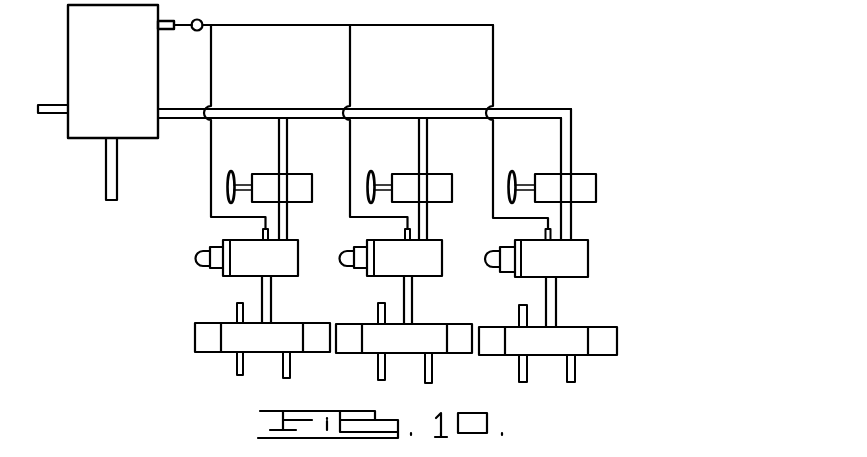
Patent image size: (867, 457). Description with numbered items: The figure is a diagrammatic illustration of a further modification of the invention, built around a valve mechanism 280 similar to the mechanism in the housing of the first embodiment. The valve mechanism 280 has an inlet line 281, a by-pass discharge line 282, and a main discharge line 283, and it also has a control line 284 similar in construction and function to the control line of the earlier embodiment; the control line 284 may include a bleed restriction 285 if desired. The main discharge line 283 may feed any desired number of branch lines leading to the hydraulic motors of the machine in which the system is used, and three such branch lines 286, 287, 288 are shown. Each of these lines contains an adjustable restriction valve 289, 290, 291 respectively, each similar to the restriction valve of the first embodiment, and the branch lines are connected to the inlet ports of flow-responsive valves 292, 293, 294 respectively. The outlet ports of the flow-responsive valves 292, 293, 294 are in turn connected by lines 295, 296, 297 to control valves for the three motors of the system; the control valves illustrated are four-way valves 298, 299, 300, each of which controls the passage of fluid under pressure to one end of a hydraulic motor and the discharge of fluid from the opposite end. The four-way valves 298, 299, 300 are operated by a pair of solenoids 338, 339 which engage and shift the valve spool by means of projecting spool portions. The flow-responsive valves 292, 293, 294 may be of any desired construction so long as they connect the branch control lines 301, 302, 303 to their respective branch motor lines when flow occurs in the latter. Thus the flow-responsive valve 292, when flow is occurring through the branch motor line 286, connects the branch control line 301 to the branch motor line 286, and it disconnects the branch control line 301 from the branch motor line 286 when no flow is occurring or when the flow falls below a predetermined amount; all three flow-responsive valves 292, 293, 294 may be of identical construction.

The valve mechanism 280 is at (80, 49).
The inlet line 281 is at (50, 109).
The by-pass discharge line 282 is at (107, 183).
The main discharge line 283 is at (192, 94).
The control line 284 is at (173, 21).
The bleed restriction 285 is at (203, 19).
The branch line 286 is at (282, 147).
The branch line 287 is at (427, 146).
The branch line 288 is at (566, 148).
The adjustable restriction valve 289 is at (297, 181).
The adjustable restriction valve 290 is at (435, 181).
The adjustable restriction valve 291 is at (584, 188).
The flow-responsive valve 292 is at (287, 268).
The flow-responsive valve 293 is at (433, 268).
The flow-responsive valve 294 is at (578, 270).
The line 295 is at (267, 307).
The line 296 is at (412, 308).
The line 297 is at (552, 313).
The four-way valve 298 is at (236, 345).
The four-way valve 299 is at (372, 348).
The four-way valve 300 is at (517, 351).
The branch control line 301 is at (210, 185).
The branch control line 302 is at (352, 166).
The branch control line 303 is at (493, 209).
The solenoid 338 is at (201, 332).
The solenoid 339 is at (318, 346).